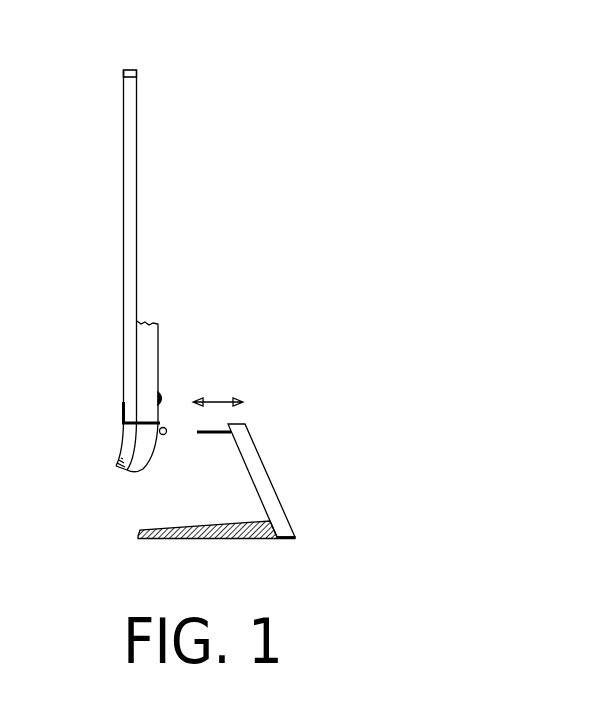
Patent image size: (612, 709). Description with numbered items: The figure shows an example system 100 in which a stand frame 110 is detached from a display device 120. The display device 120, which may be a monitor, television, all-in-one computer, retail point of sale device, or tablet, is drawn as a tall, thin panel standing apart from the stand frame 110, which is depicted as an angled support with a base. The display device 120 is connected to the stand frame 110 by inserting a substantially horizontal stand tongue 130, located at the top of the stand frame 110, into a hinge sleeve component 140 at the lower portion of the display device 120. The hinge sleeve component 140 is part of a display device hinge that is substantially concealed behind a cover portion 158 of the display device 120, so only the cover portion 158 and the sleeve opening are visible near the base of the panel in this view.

The system 100 is at (342, 74).
The stand frame 110 is at (257, 480).
The display device 120 is at (130, 255).
The stand tongue 130 is at (220, 432).
The hinge sleeve component 140 is at (166, 428).
The cover portion 158 is at (165, 325).